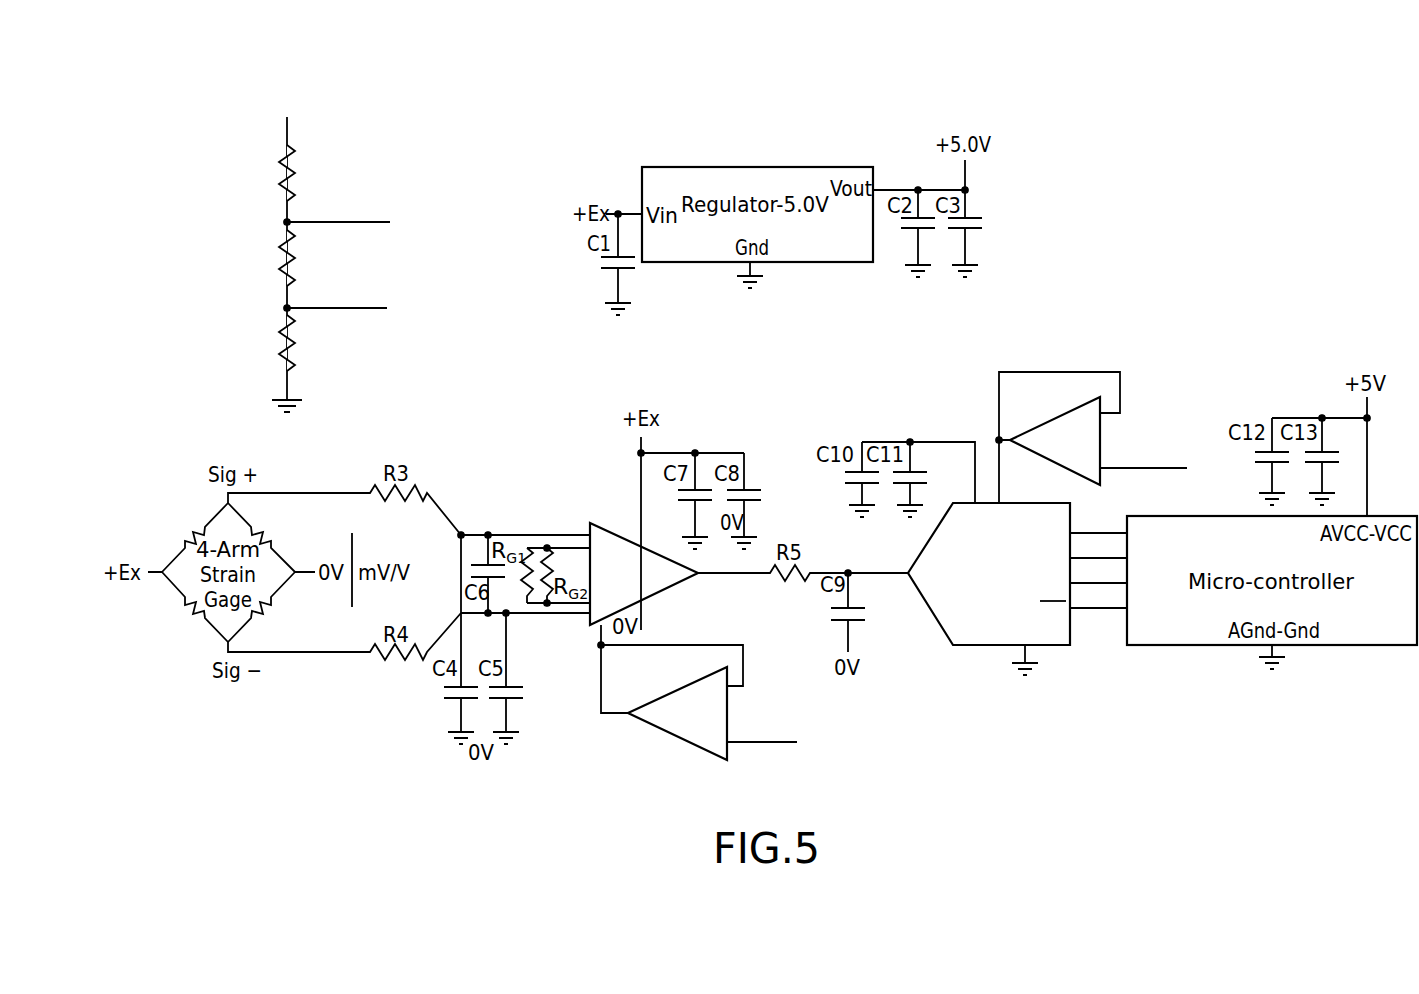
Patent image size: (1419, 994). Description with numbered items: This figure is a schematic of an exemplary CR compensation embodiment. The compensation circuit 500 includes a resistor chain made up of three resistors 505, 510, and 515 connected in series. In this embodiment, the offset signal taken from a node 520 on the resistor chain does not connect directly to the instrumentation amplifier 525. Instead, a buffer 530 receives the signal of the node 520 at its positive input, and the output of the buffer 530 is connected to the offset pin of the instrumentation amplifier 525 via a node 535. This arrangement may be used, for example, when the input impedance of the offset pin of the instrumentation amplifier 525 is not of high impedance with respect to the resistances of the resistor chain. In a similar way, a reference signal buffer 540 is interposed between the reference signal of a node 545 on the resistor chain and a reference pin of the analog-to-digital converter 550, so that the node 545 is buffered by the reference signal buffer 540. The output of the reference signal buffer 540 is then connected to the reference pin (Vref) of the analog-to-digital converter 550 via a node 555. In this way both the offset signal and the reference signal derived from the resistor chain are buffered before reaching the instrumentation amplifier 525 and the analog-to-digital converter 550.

The compensation circuit 500 is at (198, 388).
The resistor 505 is at (275, 190).
The resistor 510 is at (275, 272).
The resistor 515 is at (293, 350).
The node 520 is at (368, 308).
The instrumentation amplifier 525 is at (618, 532).
The buffer 530 is at (676, 739).
The node 535 is at (600, 707).
The reference signal buffer 540 is at (1100, 435).
The node 545 is at (338, 222).
The analog-to-digital converter 550 is at (968, 646).
The node 555 is at (1028, 372).